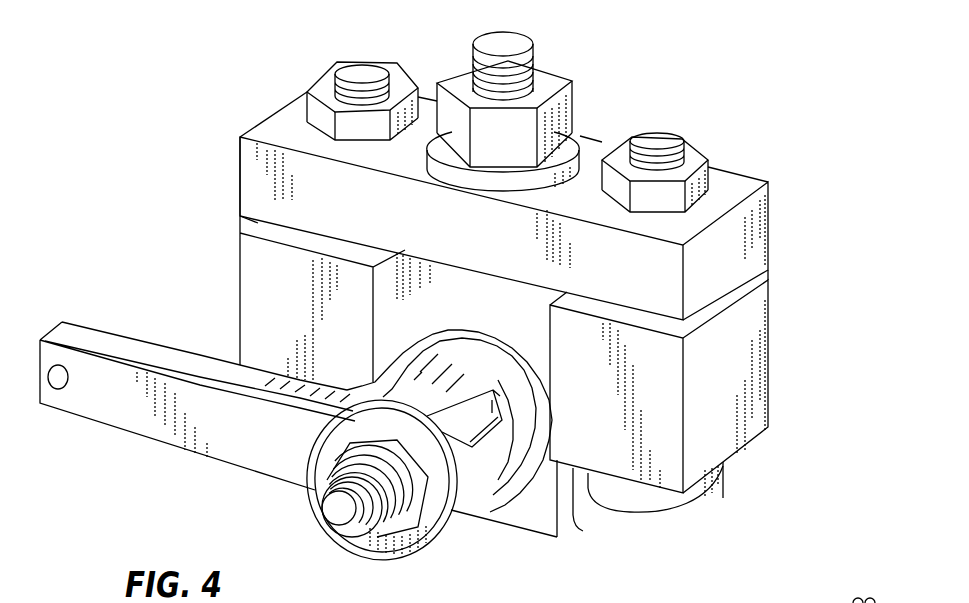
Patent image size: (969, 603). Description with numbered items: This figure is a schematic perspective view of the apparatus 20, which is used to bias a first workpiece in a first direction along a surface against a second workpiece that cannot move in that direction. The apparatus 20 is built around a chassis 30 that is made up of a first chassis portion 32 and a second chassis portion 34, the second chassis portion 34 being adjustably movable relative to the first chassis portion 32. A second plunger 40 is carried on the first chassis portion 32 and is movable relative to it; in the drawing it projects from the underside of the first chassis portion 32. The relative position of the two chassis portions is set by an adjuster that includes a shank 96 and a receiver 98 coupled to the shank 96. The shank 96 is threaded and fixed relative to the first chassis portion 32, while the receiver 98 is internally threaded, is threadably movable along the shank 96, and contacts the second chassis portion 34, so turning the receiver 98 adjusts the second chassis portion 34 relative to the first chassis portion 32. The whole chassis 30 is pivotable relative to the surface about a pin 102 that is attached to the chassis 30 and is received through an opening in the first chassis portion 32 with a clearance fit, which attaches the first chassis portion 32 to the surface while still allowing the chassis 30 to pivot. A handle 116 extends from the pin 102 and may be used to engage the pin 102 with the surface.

The apparatus 20 is at (452, 299).
The chassis 30 is at (552, 283).
The first chassis portion 32 is at (740, 372).
The second chassis portion 34 is at (740, 233).
The second plunger 40 is at (714, 509).
The shank 96 is at (517, 43).
The receiver 98 is at (573, 105).
The pin 102 is at (340, 513).
The handle 116 is at (130, 415).